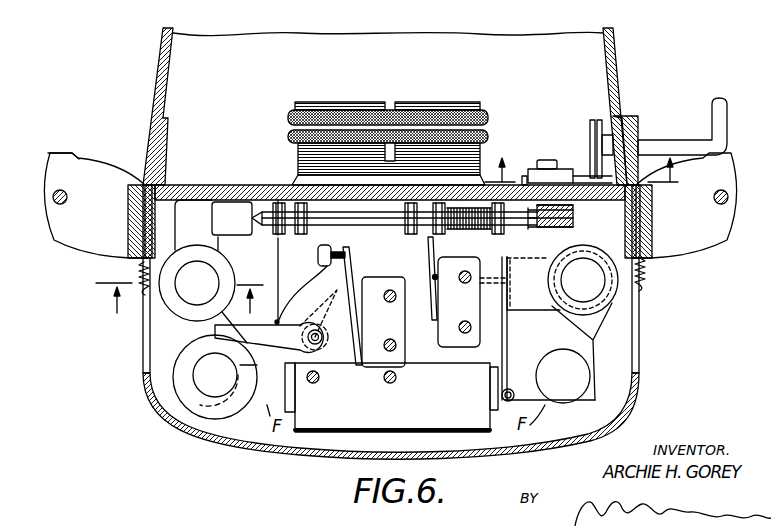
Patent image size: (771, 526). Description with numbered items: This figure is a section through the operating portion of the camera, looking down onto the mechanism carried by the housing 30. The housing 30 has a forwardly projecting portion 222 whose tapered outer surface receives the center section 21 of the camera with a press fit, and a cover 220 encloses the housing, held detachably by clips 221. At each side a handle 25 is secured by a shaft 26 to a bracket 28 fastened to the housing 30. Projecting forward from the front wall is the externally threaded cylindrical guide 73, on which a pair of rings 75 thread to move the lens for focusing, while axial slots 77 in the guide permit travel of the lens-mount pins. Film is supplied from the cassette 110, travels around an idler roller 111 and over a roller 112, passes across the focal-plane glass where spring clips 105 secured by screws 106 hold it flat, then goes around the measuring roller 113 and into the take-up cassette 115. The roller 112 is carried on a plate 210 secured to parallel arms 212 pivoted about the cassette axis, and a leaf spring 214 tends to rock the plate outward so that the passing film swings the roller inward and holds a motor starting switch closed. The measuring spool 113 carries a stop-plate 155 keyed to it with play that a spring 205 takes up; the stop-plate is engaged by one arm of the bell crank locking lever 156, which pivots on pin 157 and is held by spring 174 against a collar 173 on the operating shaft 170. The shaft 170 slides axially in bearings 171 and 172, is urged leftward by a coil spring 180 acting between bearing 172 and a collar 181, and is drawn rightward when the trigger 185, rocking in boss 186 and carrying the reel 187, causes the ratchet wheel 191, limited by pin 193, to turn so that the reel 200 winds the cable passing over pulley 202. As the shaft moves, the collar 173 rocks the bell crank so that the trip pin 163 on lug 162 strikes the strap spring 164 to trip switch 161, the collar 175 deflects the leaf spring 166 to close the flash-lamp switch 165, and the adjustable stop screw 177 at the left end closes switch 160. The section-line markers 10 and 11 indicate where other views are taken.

The center section 21 is at (181, 87).
The forwardly projecting portion 222 is at (160, 137).
The handle 25 is at (70, 161).
The shaft 26 is at (68, 198).
The bracket 28 is at (90, 237).
The housing 30 is at (195, 190).
The switch 160 is at (234, 208).
The bearing 171 is at (277, 190).
The rings 75 is at (292, 133).
The slots 77 is at (387, 105).
The cylindrical guide 73 is at (468, 106).
The section line 10 is at (581, 162).
The section line 11 is at (179, 288).
The pin 193 is at (525, 177).
The ratchet wheel 191 is at (562, 175).
The reel 187 is at (592, 123).
The boss 186 is at (628, 125).
The trigger 185 is at (683, 142).
The adjustable stop screw 177 is at (265, 229).
The collar 173 is at (301, 236).
The lug 162 is at (332, 251).
The operating shaft 170 is at (362, 226).
The collar 175 is at (410, 236).
The strap spring 164 is at (349, 266).
The trip pin 163 is at (324, 272).
The bell crank locking lever 156 is at (320, 302).
The pin 157 is at (322, 342).
The switch 161 is at (398, 348).
The leaf spring 166 is at (435, 310).
The switch 165 is at (459, 302).
The collar 181 is at (450, 226).
The coil spring 180 is at (497, 228).
The bearing 172 is at (500, 231).
The pulley 202 is at (572, 223).
The reel 200 is at (558, 230).
The leaf spring 214 is at (559, 280).
The parallel arms 212 is at (518, 306).
The plate 210 is at (507, 345).
The cassette 110 is at (600, 336).
The roller 112 is at (510, 391).
The idler roller 111 is at (578, 382).
The cover 220 is at (640, 380).
The clips 221 is at (645, 287).
The spring clips 105 is at (416, 435).
The screws 106 is at (397, 382).
The spring 174 is at (320, 380).
The stop-plate 155 is at (221, 413).
The spring 205 is at (215, 379).
The measuring roller 113 is at (178, 372).
The take-up cassette 115 is at (183, 313).